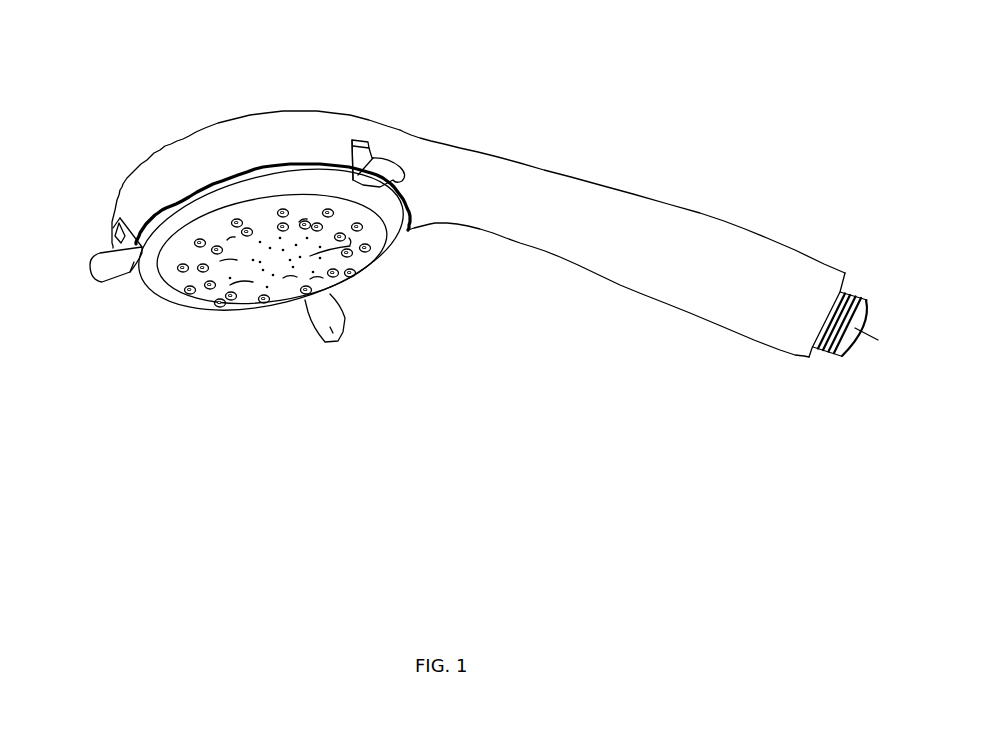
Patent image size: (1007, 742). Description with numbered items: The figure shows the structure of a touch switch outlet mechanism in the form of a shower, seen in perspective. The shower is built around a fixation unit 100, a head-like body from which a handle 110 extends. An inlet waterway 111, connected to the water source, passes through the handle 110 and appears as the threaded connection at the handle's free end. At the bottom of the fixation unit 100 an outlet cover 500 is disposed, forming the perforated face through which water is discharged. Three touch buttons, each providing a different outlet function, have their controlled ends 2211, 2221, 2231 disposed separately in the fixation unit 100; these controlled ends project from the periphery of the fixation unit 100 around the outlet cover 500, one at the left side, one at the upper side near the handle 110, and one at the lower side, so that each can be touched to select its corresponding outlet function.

The fixation unit 100 is at (210, 123).
The handle 110 is at (648, 210).
The inlet waterway 111 is at (847, 292).
The outlet cover 500 is at (254, 289).
The controlled end 2211 is at (98, 278).
The controlled end 2221 is at (366, 170).
The controlled end 2231 is at (332, 338).